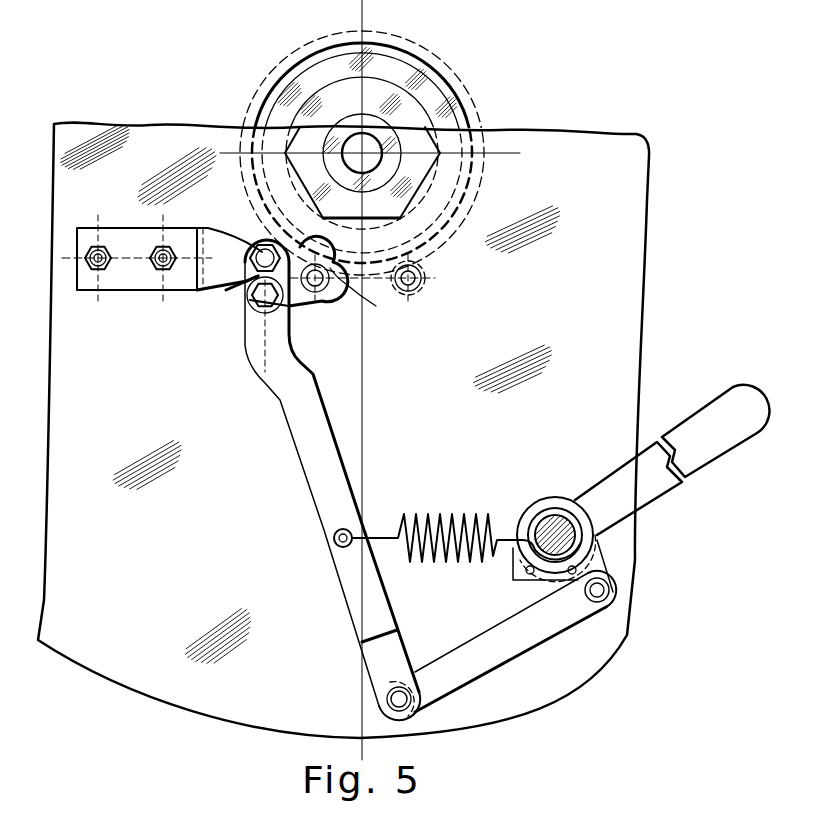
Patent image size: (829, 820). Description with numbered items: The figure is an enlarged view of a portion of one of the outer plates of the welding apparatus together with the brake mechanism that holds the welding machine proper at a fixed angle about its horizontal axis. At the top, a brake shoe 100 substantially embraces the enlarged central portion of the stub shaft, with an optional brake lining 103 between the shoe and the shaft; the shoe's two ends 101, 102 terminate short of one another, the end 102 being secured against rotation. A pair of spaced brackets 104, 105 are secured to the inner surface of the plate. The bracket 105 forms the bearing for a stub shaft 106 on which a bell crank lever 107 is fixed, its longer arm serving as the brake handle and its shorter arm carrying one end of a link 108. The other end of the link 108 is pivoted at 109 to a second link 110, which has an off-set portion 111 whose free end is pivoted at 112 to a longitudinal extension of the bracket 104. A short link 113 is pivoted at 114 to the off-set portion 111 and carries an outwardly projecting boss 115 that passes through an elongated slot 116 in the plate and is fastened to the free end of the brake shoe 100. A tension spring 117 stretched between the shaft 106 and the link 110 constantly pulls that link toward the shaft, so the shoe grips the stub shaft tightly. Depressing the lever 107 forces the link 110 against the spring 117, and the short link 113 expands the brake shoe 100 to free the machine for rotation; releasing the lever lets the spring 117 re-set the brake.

The brake shoe 100 is at (455, 85).
The brake lining 103 is at (458, 122).
The bracket 104 is at (115, 240).
The second link 110 is at (330, 500).
The off-set portion 111 is at (262, 340).
The pivot 112 is at (243, 283).
The end of brake shoe 101 is at (329, 287).
The elongated slot 116 is at (323, 267).
The boss 115 is at (366, 296).
The short link 113 is at (303, 308).
The pivot 114 is at (300, 312).
The end of brake shoe 102 is at (410, 289).
The tension spring 117 is at (441, 512).
The bracket 105 is at (542, 497).
The stub shaft 106 is at (577, 543).
The bell crank lever 107 is at (700, 428).
The link 108 is at (542, 628).
The pivot 109 is at (413, 703).